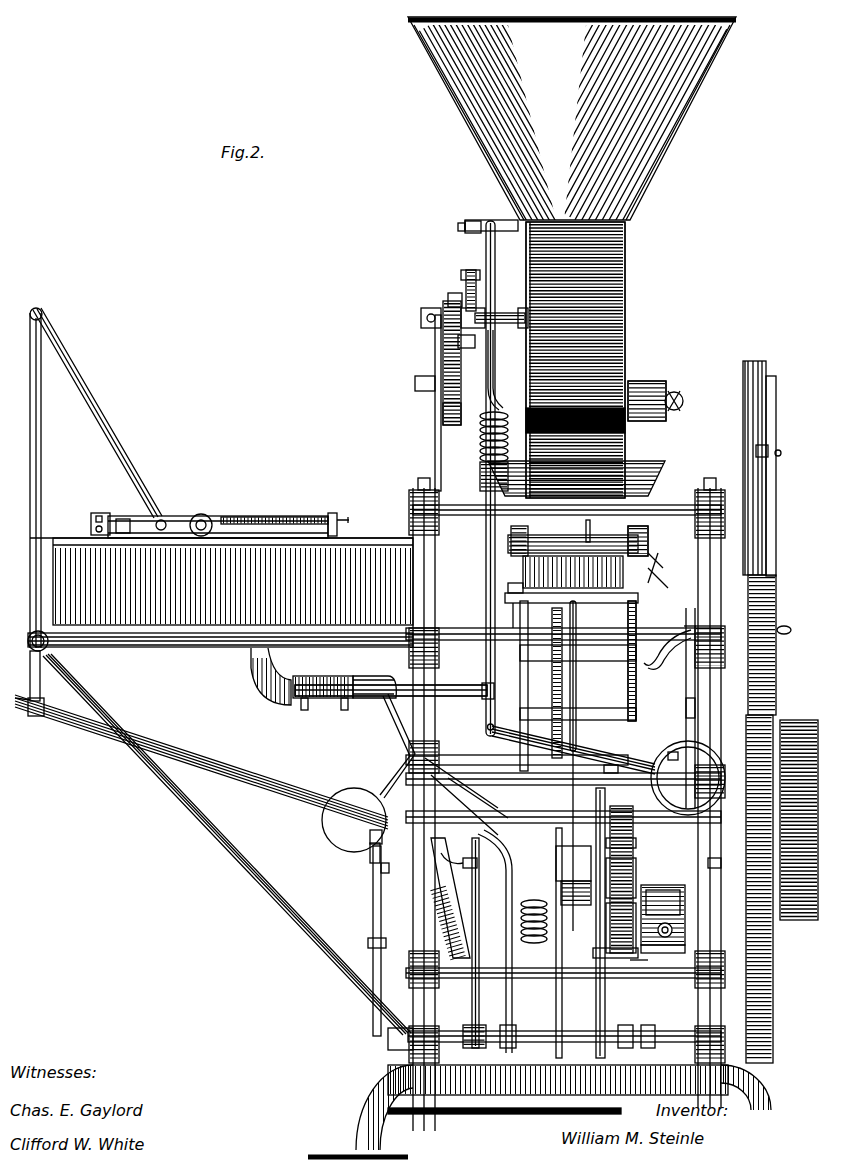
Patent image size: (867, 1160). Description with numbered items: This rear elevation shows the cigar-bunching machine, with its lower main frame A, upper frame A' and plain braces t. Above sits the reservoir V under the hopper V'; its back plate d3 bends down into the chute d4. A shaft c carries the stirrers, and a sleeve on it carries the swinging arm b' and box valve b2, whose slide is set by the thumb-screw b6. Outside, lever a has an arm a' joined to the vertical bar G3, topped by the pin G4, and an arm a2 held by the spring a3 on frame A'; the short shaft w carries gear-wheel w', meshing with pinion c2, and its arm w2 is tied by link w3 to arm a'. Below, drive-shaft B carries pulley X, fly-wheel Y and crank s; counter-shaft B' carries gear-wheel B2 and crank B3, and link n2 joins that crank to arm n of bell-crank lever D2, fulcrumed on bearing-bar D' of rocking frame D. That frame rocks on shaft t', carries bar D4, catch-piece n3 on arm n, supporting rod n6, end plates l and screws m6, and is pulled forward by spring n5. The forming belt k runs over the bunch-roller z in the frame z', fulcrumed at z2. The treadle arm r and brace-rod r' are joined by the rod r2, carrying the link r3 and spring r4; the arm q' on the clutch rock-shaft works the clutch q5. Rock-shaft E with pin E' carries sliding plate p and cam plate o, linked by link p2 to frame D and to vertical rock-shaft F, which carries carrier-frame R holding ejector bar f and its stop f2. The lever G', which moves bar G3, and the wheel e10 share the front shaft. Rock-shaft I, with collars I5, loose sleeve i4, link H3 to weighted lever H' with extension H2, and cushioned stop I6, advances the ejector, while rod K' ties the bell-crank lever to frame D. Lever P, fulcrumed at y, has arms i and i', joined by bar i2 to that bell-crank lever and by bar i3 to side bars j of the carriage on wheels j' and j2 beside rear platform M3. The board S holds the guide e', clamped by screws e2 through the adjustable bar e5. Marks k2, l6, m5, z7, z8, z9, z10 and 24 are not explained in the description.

The hopper V' is at (574, 118).
The feed chute V is at (575, 360).
The chute casing d3 is at (575, 360).
The chute bottom d4 is at (620, 437).
The bracket G4 is at (484, 212).
The shaft w3 is at (461, 263).
The connecting rod a' is at (501, 478).
The block c2 is at (443, 289).
The bearing c is at (413, 308).
The gear wheel w is at (427, 363).
The gear w' is at (429, 409).
The gear w2 is at (450, 333).
The shaft a is at (494, 309).
The arm a2 is at (485, 349).
The spring a3 is at (500, 436).
The frame A' is at (543, 378).
The block b' is at (647, 384).
The plate b2 is at (645, 372).
The handle b6 is at (672, 393).
The standard e' is at (739, 468).
The slide plate S is at (765, 418).
The stud e5 is at (760, 444).
The screw e2 is at (773, 446).
The post P is at (49, 478).
The rod i' is at (49, 483).
The brace i3 is at (97, 413).
The block j2 is at (84, 512).
The pin j is at (160, 506).
The roller j' is at (201, 510).
The rack k is at (262, 509).
The slide k2 is at (286, 509).
The hook l6 is at (342, 511).
The rod G3 is at (405, 501).
The tank M3 is at (176, 616).
The hub y is at (20, 633).
The arm i is at (33, 683).
The link i2 is at (190, 744).
The brace rod t is at (227, 844).
The sleeve q' is at (427, 1089).
The bracket I6 is at (243, 675).
The cylinder H3 is at (347, 672).
The pin i4 is at (333, 695).
The pin I5 is at (296, 702).
The link H' is at (384, 746).
The disk H2 is at (344, 781).
The bolt s is at (362, 829).
The lever I is at (446, 676).
The base A is at (541, 1111).
The cross bar t' is at (563, 907).
The frame R is at (578, 686).
The upright D is at (598, 803).
The shaft f is at (566, 680).
The plate n6 is at (548, 683).
The plate l is at (497, 590).
The rod z2 is at (500, 580).
The bar m5 is at (560, 540).
The pin p is at (590, 532).
The clamp z' is at (583, 517).
The clamp z is at (644, 540).
The pin z10 is at (666, 551).
The arm z7 is at (670, 566).
The arm z8 is at (659, 574).
The block m6 is at (573, 569).
The bracket f2 is at (647, 614).
The pin z9 is at (683, 613).
The link D4 is at (530, 757).
The pin n3 is at (605, 757).
The pulley G' is at (682, 778).
The pin e10 is at (665, 744).
The rod F is at (688, 700).
The gear Y is at (768, 690).
The pulley X is at (799, 820).
The rod r' is at (418, 941).
The clamp r2 is at (358, 849).
The clamp r3 is at (362, 880).
The hook r4 is at (454, 865).
The rod r is at (463, 943).
The arm K' is at (471, 941).
The shaft n is at (590, 842).
The gear B is at (637, 879).
The pin p2 is at (613, 842).
The gear B' is at (637, 877).
The gear B3 is at (576, 934).
The gear B2 is at (597, 955).
The rod n2 is at (553, 861).
The block D2 is at (575, 872).
The block D' is at (558, 871).
The spring n5 is at (513, 928).
The arrow 24 is at (637, 962).
The box E is at (663, 957).
The box E' is at (686, 910).
The knob o is at (662, 918).
The stud q5 is at (710, 853).